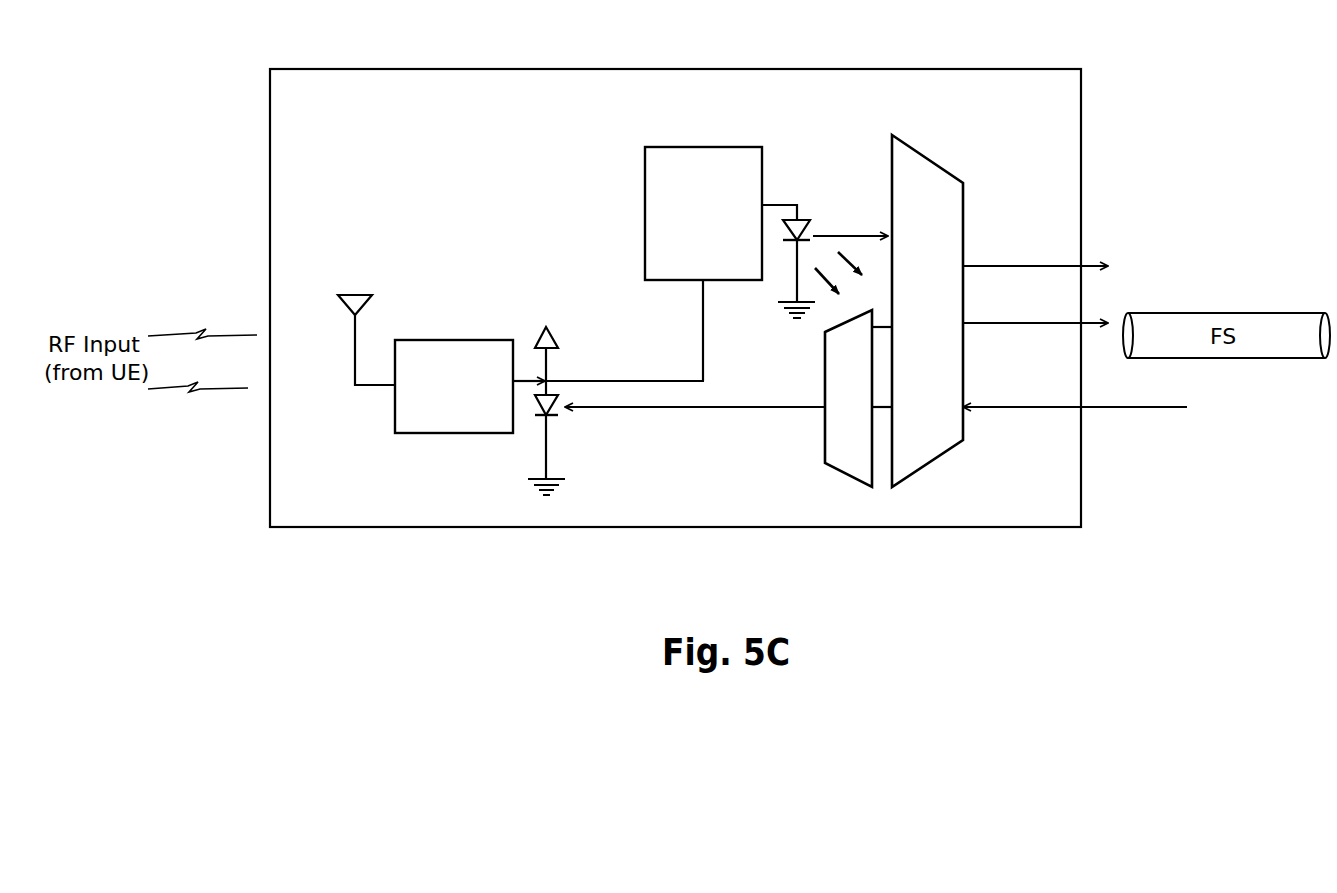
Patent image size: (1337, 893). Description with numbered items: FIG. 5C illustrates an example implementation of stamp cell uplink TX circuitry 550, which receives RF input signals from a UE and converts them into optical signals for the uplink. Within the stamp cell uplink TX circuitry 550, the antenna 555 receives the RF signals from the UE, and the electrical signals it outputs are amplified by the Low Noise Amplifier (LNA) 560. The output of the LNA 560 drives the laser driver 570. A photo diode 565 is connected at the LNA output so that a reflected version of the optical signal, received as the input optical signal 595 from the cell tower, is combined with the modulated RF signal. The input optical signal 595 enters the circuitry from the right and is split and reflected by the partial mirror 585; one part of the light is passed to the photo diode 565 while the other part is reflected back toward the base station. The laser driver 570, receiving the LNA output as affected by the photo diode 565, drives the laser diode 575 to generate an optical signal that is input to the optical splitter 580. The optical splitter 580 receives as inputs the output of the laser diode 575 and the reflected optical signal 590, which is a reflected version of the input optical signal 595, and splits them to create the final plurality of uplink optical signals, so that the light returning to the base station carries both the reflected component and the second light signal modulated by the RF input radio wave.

The stamp cell uplink TX circuitry 550 is at (982, 69).
The antenna 555 is at (370, 305).
The Low Noise Amplifier (LNA) 560 is at (549, 386).
The photo diode 565 is at (558, 420).
The laser driver 570 is at (721, 264).
The laser diode 575 is at (807, 222).
The optical splitter 580 is at (1000, 311).
The partial mirror 585 is at (728, 398).
The reflected optical signal 590 is at (1043, 325).
The input optical signal 595 is at (1050, 410).